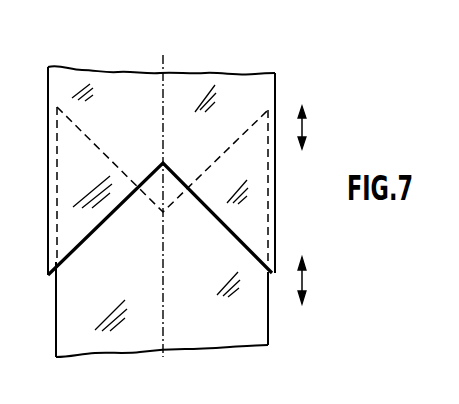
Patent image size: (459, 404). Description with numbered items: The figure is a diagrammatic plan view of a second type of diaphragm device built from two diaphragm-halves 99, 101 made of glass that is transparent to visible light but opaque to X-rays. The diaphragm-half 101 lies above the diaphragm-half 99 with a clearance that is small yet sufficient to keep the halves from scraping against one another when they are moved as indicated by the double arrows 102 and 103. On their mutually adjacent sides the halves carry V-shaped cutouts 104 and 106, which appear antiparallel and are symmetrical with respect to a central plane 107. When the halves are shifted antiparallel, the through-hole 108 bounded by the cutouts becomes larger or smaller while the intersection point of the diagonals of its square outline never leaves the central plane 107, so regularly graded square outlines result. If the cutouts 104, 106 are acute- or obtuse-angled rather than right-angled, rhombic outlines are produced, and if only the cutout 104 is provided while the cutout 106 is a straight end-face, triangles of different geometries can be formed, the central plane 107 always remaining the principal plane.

The diaphragm-half 99 is at (247, 310).
The diaphragm-half 101 is at (242, 84).
The double arrow 102 is at (303, 281).
The double arrow 103 is at (303, 128).
The V-shaped cutout 104 is at (244, 130).
The V-shaped cutout 106 is at (222, 222).
The central plane 107 is at (163, 352).
The through-hole 108 is at (157, 190).